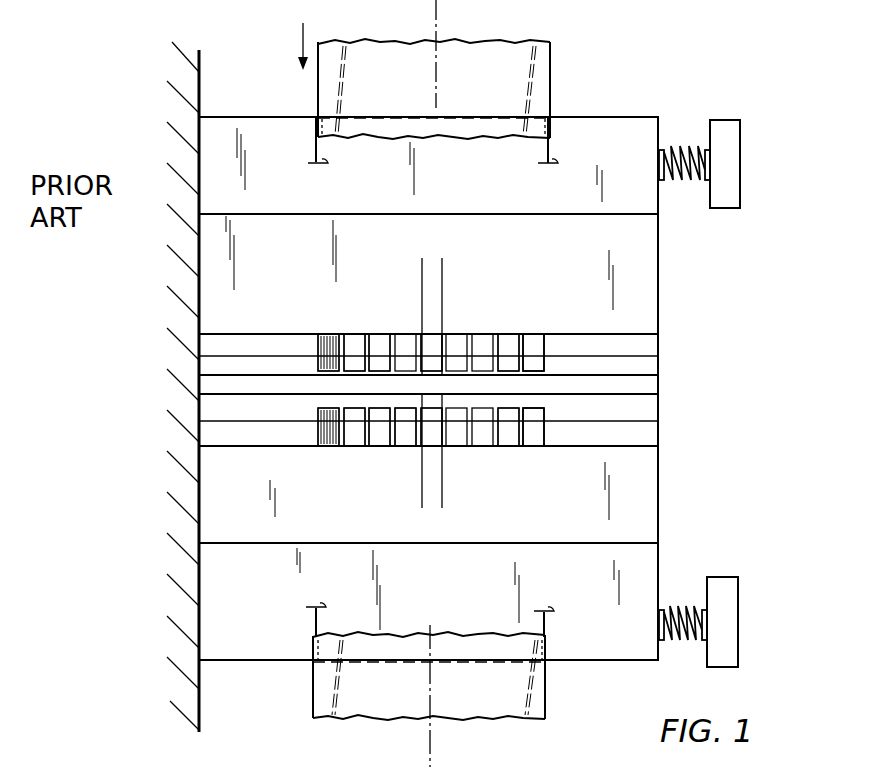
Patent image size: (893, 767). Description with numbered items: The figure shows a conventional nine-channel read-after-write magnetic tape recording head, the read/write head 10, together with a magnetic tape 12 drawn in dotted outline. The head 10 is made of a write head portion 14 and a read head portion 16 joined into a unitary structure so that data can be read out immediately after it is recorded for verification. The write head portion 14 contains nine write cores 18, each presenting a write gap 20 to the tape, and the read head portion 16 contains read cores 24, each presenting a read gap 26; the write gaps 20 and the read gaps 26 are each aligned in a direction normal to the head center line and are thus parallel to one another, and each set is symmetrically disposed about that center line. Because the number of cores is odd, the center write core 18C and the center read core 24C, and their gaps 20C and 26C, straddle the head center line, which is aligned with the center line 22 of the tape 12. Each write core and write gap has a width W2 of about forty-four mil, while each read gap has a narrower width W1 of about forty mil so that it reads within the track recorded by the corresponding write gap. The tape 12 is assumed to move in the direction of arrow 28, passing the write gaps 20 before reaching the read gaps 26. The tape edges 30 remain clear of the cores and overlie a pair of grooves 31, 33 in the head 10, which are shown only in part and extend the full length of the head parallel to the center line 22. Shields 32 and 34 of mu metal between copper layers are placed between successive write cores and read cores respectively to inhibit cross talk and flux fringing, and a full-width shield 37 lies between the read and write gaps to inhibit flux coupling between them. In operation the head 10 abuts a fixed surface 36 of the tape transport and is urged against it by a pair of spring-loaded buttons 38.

The read/write head 10 is at (619, 118).
The magnetic tape 12 is at (538, 57).
The write head portion 14 is at (656, 268).
The read head portion 16 is at (645, 484).
The write cores 18 is at (322, 346).
The center write core 18C is at (435, 345).
The write gaps 20 is at (333, 357).
The center write gap 20C is at (436, 372).
The center line of tape 22 is at (438, 88).
The read cores 24 is at (318, 429).
The center read core 24C is at (429, 407).
The read gaps 26 is at (322, 413).
The center read gap 26C is at (437, 447).
The arrow 28 is at (303, 42).
The tape edges 30 is at (318, 76).
The groove 31 is at (314, 153).
The shields 32 is at (383, 334).
The groove 33 is at (549, 156).
The shields 34 is at (391, 447).
The fixed surface 36 is at (199, 68).
The shield 37 is at (651, 383).
The spring-loaded buttons 38 is at (728, 120).
The read gap width W1 is at (388, 495).
The write gap width W2 is at (388, 267).